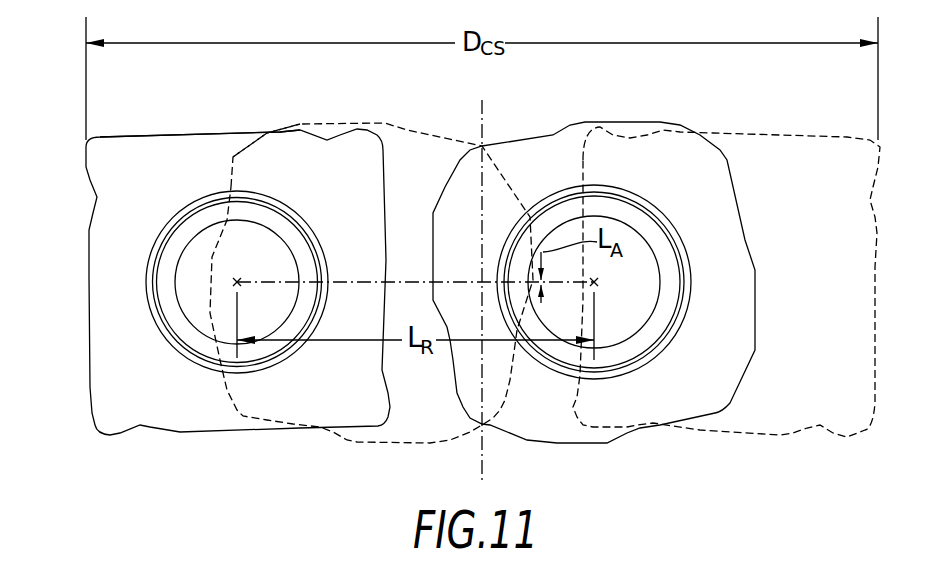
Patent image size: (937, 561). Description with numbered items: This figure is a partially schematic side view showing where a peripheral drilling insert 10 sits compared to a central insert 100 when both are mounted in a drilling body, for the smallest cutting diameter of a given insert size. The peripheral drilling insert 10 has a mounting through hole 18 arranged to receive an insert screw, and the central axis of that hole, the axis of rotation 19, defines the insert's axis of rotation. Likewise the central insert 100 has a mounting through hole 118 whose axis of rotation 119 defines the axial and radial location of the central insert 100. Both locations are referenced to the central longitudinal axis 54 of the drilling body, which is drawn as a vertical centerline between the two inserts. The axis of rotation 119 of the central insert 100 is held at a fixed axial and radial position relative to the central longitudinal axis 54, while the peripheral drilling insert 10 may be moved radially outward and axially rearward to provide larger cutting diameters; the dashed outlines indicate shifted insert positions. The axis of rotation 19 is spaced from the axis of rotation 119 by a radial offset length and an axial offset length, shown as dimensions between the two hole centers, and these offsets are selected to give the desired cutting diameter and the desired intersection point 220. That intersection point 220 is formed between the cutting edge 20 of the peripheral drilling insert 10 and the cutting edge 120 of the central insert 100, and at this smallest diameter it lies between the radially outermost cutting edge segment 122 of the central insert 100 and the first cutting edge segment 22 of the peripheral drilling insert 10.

The peripheral drilling insert 10 is at (148, 130).
The cutting edge 20 is at (211, 254).
The first cutting edge segment 22 is at (187, 136).
The mounting through hole 18 is at (186, 245).
The axis of rotation 19 is at (235, 281).
The intersection point 220 is at (280, 128).
The radially outermost cutting edge segment 122 is at (267, 141).
The cutting edge 120 is at (407, 140).
The central longitudinal axis 54 is at (484, 121).
The central insert 100 is at (609, 114).
The mounting through hole 118 is at (624, 340).
The axis of rotation 119 is at (597, 282).